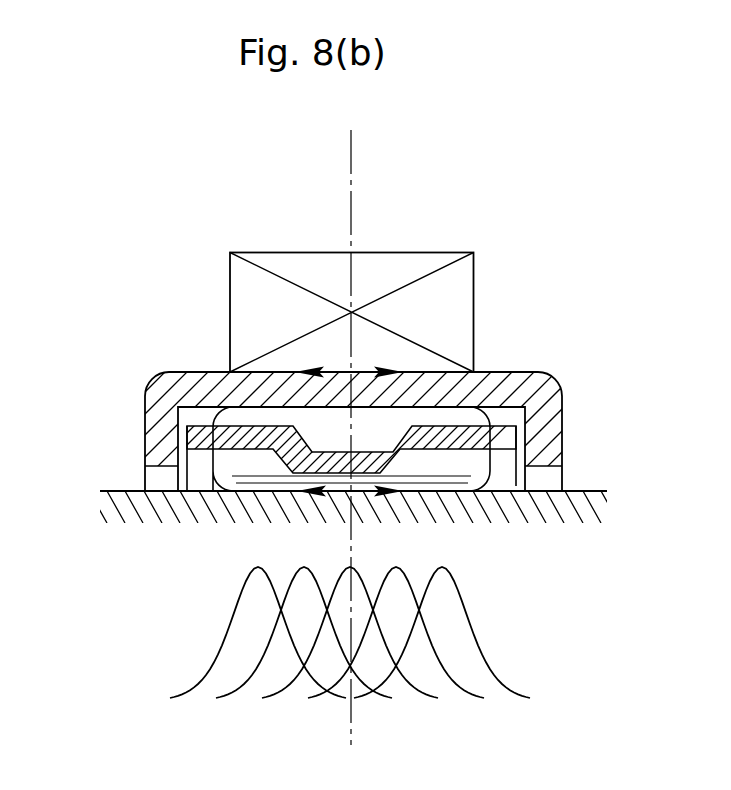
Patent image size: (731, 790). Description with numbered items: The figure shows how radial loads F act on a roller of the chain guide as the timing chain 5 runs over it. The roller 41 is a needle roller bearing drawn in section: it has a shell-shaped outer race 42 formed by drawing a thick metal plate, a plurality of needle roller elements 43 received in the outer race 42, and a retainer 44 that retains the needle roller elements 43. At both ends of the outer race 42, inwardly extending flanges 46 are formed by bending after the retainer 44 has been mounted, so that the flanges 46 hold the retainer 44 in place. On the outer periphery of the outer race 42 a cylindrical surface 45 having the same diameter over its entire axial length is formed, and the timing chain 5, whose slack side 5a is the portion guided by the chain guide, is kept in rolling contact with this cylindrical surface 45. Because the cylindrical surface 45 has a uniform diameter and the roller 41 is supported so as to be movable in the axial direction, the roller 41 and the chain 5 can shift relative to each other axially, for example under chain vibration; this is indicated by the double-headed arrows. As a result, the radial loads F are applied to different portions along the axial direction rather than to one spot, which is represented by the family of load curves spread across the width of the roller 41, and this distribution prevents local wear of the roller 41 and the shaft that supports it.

The timing chain 5 is at (248, 252).
The slack side 5a is at (294, 268).
The roller 41 is at (168, 372).
The outer race 42 is at (422, 385).
The needle roller elements 43 is at (328, 442).
The retainer 44 is at (255, 438).
The cylindrical surface 45 is at (445, 372).
The inwardly extending flanges 46 is at (163, 452).
The radial loads F is at (217, 658).